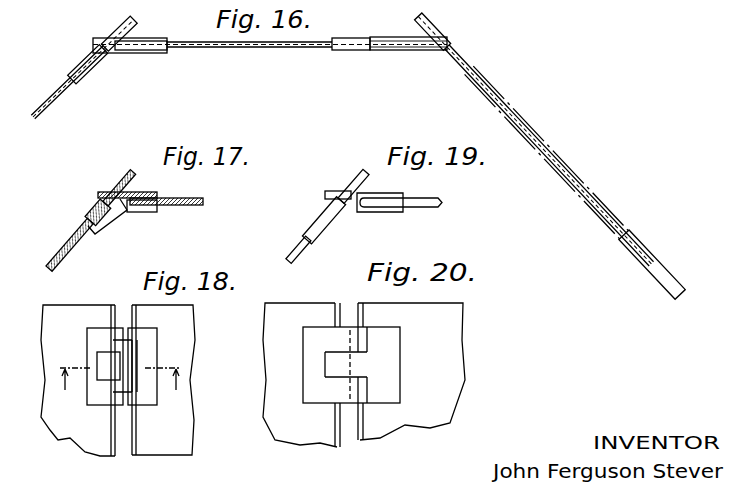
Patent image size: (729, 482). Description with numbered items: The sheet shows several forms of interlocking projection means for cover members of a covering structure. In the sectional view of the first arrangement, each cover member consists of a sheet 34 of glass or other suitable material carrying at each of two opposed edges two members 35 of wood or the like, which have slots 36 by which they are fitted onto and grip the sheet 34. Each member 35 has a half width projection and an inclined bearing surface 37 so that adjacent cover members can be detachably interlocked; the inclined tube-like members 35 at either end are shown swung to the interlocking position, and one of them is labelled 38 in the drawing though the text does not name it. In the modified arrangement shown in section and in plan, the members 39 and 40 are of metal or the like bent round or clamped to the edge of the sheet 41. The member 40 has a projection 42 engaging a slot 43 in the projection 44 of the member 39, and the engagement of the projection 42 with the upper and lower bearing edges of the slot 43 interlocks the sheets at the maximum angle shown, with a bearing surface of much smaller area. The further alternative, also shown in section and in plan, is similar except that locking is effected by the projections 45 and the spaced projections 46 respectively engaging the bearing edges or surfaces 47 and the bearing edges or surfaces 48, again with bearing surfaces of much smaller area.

In FIG. 16, the sheet 34 is at (342, 50).
In FIG. 16, the member 35 is at (145, 53).
In FIG. 16, the slot 36 is at (138, 40).
In FIG. 16, the inclined bearing surface 37 is at (447, 36).
In FIG. 16, the tube 38 is at (518, 118).
In FIG. 17, the member 39 is at (95, 210).
In FIG. 18, the member 39 is at (100, 402).
In FIG. 17, the member 40 is at (150, 212).
In FIG. 17, the sheet 41 is at (80, 250).
In FIG. 18, the sheet 41 is at (160, 440).
In FIG. 17, the projection 42 is at (98, 192).
In FIG. 17, the slot 43 is at (135, 195).
In FIG. 18, the slot 43 is at (118, 368).
In FIG. 17, the projection 44 is at (135, 175).
In FIG. 18, the projection 44 is at (137, 350).
In FIG. 19, the projection 45 is at (327, 193).
In FIG. 20, the projection 45 is at (336, 372).
In FIG. 19, the spaced projection 46 is at (370, 175).
In FIG. 20, the spaced projection 46 is at (359, 382).
In FIG. 19, the bearing edge or surface 47 is at (345, 200).
In FIG. 19, the bearing edge or surface 48 is at (372, 194).